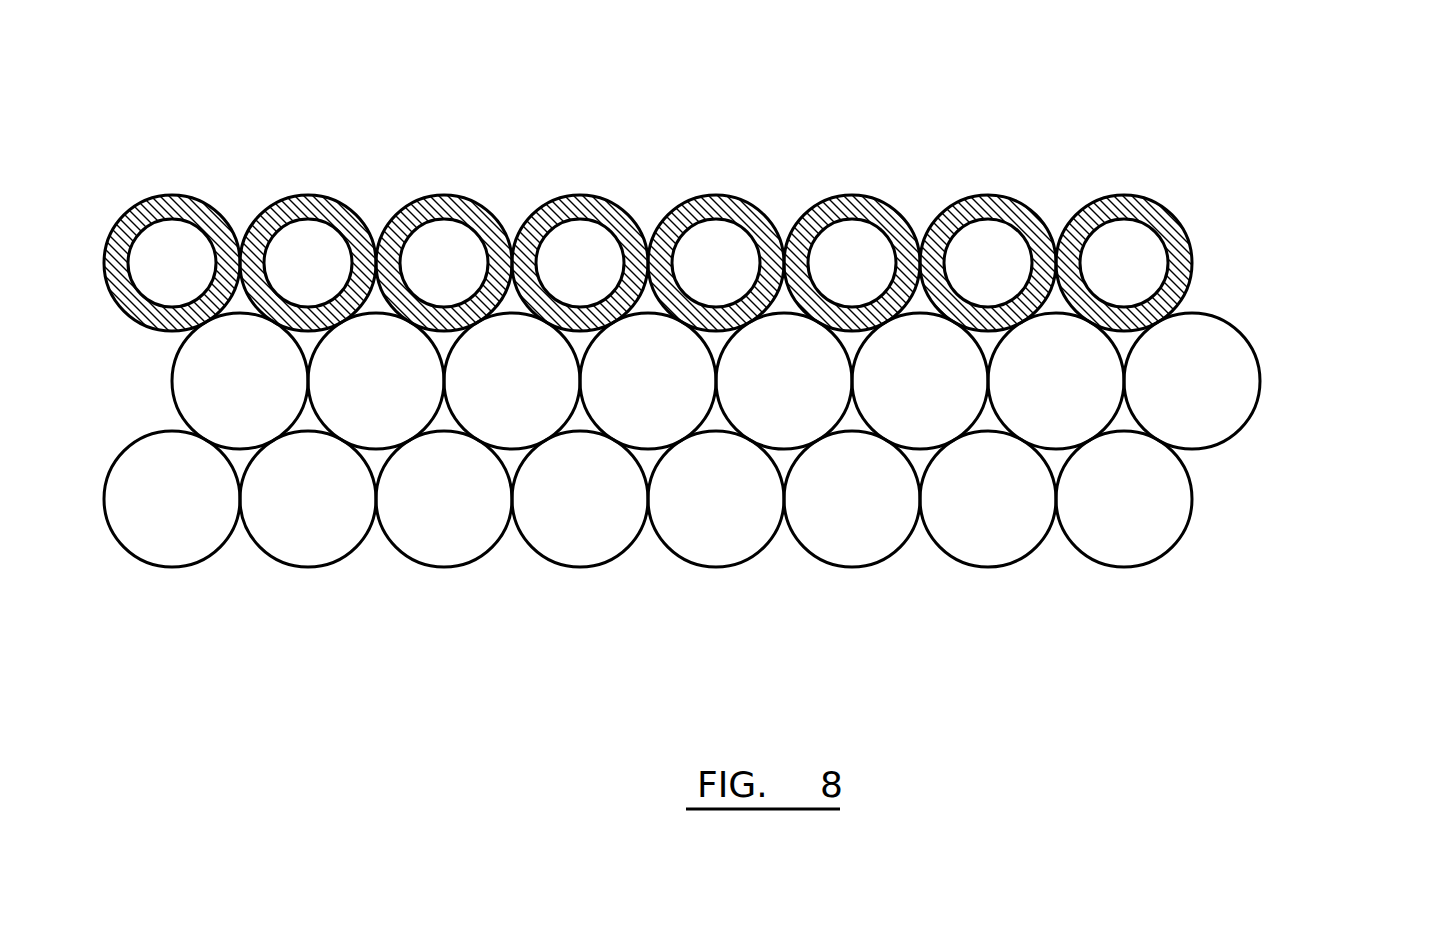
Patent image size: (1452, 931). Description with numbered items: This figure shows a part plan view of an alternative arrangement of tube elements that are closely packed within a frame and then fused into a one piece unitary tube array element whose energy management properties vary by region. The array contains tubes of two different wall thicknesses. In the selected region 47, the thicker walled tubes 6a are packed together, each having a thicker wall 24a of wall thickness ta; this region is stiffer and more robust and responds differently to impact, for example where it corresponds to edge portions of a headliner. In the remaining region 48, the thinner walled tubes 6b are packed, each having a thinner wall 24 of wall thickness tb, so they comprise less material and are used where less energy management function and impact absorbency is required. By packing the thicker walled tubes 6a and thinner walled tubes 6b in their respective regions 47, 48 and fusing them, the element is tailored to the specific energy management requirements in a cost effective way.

The thicker walled tube 6a is at (715, 250).
The thicker wall 24a is at (830, 207).
The wall thickness of thicker tube ta is at (850, 265).
The selected region 47 is at (773, 198).
The remaining region 48 is at (773, 505).
The thinner walled tube 6b is at (1208, 397).
The wall thickness of thinner tube tb is at (853, 500).
The thinner wall 24 is at (875, 567).